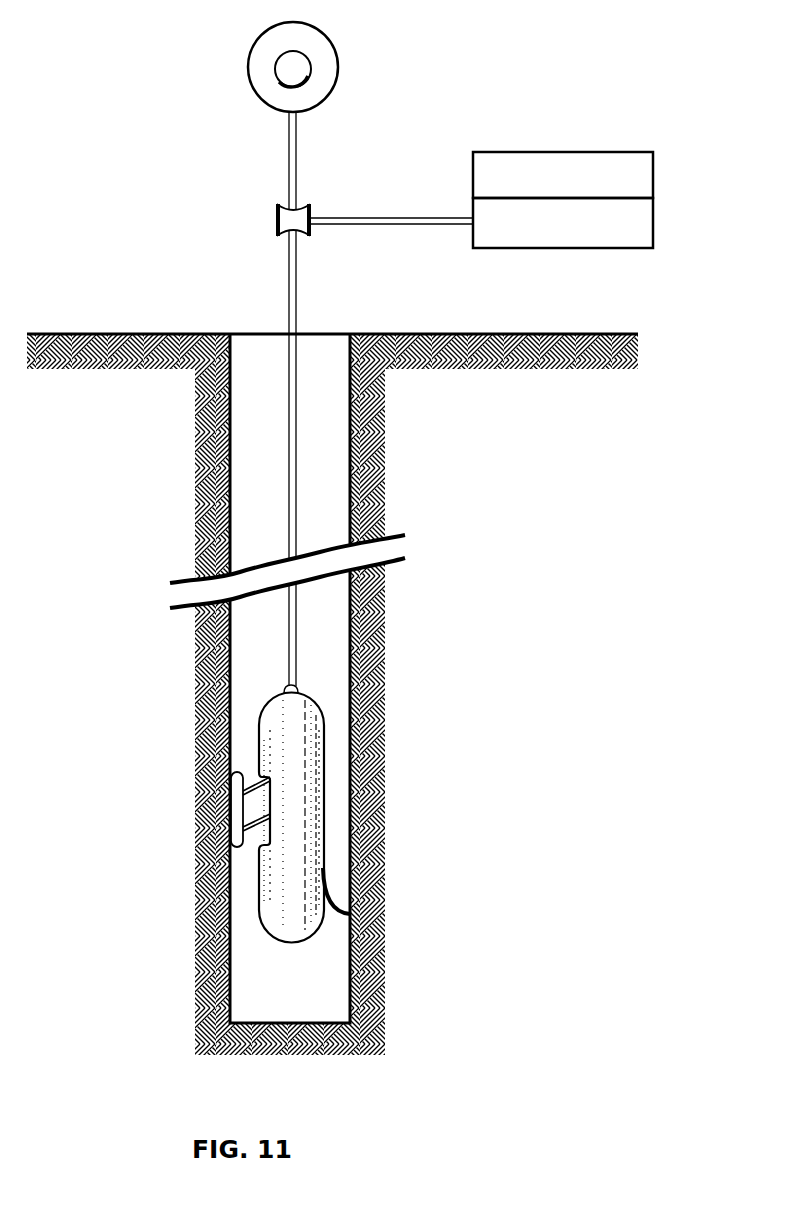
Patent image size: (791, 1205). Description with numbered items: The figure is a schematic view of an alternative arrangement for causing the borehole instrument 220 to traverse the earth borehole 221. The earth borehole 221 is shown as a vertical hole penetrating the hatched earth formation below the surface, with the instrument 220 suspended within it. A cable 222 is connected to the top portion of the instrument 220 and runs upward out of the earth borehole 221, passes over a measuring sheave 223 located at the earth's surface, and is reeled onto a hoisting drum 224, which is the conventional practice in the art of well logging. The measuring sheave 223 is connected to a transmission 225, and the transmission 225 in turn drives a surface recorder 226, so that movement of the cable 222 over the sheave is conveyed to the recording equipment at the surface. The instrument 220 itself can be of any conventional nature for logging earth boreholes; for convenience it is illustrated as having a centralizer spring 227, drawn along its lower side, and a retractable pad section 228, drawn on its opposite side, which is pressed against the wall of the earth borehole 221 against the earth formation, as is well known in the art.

The borehole instrument 220 is at (321, 763).
The earth borehole 221 is at (313, 364).
The cable 222 is at (296, 528).
The measuring sheave 223 is at (310, 207).
The hoisting drum 224 is at (323, 58).
The transmission 225 is at (653, 225).
The surface recorder 226 is at (657, 183).
The centralizer spring 227 is at (357, 880).
The retractable pad section 228 is at (231, 806).